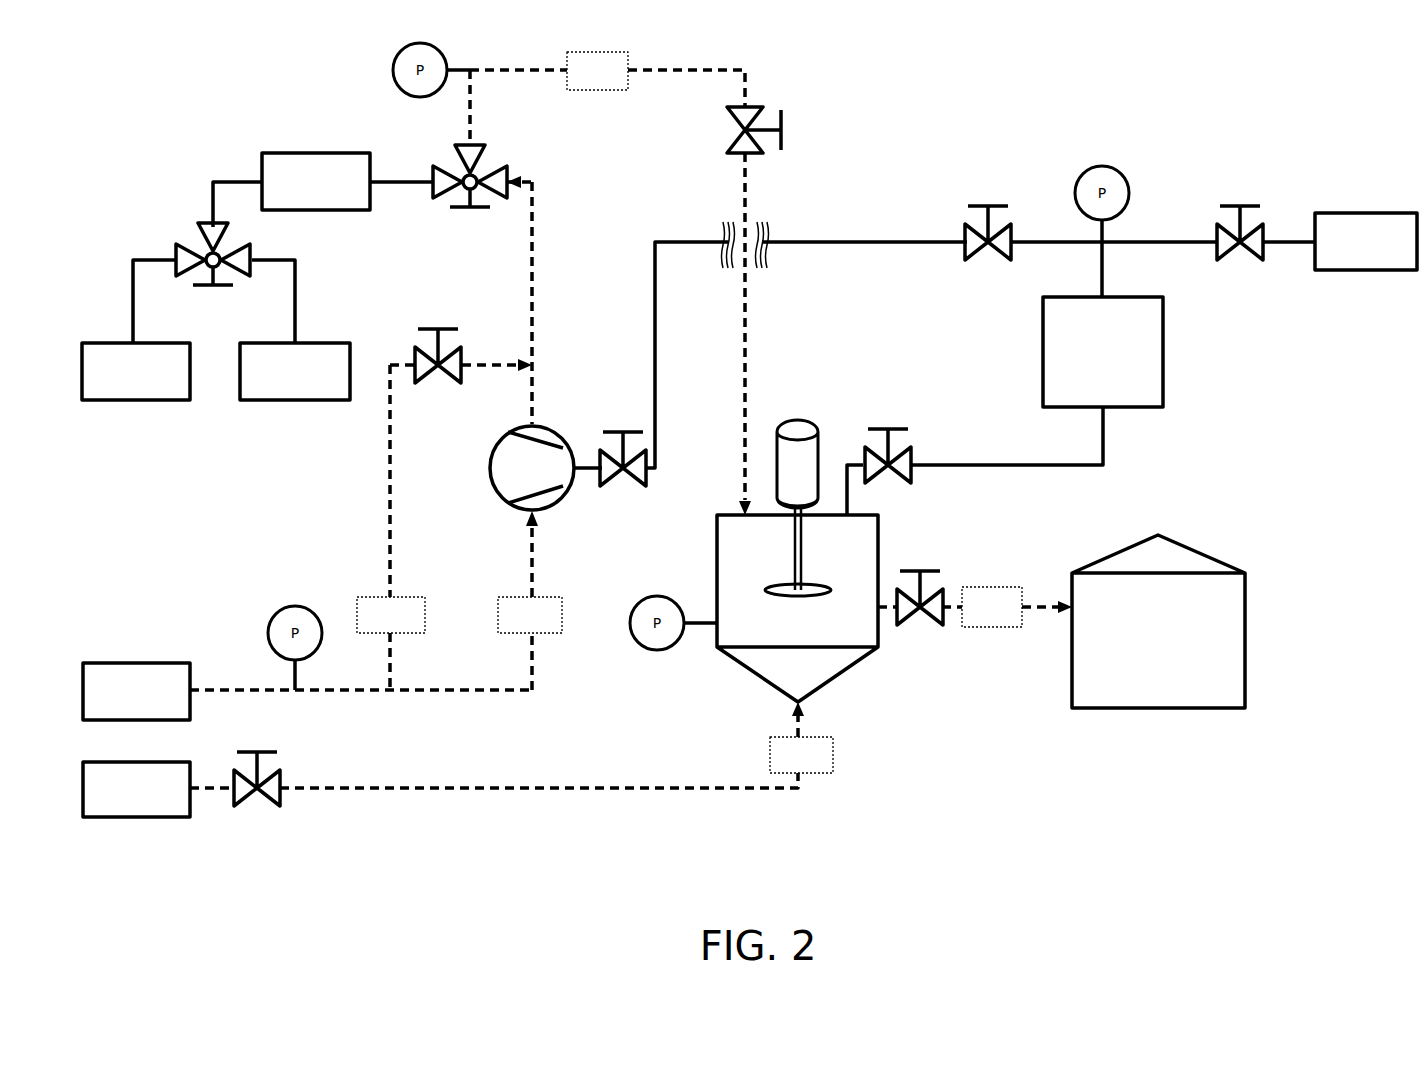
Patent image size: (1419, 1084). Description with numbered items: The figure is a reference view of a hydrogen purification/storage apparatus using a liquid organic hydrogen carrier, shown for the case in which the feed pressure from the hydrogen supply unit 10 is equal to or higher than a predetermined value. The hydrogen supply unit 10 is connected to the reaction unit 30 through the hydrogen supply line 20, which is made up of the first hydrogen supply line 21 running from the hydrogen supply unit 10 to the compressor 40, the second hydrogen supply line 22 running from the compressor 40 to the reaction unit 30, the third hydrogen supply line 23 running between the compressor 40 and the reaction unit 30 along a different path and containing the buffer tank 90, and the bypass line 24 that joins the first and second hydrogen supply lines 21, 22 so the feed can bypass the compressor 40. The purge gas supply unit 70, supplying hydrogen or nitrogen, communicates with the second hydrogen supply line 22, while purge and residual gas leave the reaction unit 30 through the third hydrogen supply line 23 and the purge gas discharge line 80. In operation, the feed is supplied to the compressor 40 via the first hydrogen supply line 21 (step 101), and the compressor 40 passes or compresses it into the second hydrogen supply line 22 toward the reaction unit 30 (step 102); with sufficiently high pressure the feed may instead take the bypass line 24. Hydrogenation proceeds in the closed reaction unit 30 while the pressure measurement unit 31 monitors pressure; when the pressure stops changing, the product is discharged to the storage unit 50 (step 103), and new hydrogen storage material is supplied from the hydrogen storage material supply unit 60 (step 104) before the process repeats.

The hydrogen supply unit 10 is at (137, 660).
The hydrogen supply line 20 is at (803, 405).
The first hydrogen supply line 21 is at (505, 695).
The second hydrogen supply line 22 is at (587, 279).
The third hydrogen supply line 23 is at (917, 245).
The bypass line 24 is at (395, 509).
The reaction unit 30 is at (860, 660).
The pressure measurement unit 31 is at (662, 650).
The compressor 40 is at (505, 500).
The storage unit 50 is at (1247, 680).
The hydrogen storage material supply unit 60 is at (137, 820).
The purge gas supply unit 70 is at (310, 445).
The purge gas discharge line 80 is at (1163, 240).
The buffer tank 90 is at (1165, 375).
The feed supply step 101 is at (459, 615).
The feed supply to reaction unit step 102 is at (597, 71).
The product discharge step 103 is at (975, 599).
The hydrogen storage material supply step 104 is at (511, 754).